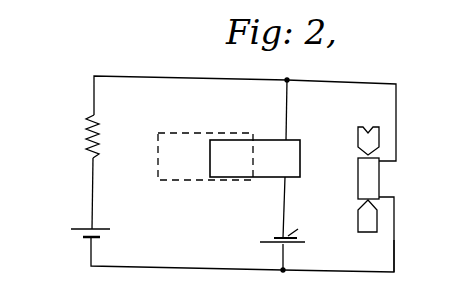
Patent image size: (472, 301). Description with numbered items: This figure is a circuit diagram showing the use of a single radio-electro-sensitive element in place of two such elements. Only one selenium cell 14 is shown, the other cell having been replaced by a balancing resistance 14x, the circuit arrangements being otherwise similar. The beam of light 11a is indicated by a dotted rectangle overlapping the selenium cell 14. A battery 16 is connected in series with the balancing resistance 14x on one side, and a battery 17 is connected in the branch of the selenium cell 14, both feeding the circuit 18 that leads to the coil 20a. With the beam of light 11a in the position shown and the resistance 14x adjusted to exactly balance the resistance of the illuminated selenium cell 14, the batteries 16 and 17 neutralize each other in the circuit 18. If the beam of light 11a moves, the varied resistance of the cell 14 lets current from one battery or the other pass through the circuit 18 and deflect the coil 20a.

The balancing resistance 14x is at (82, 145).
The battery 16 is at (105, 239).
The beam of light 11a is at (186, 133).
The selenium cell 14 is at (268, 170).
The battery 17 is at (268, 242).
The coil 20a is at (374, 178).
The circuit 18 is at (394, 265).